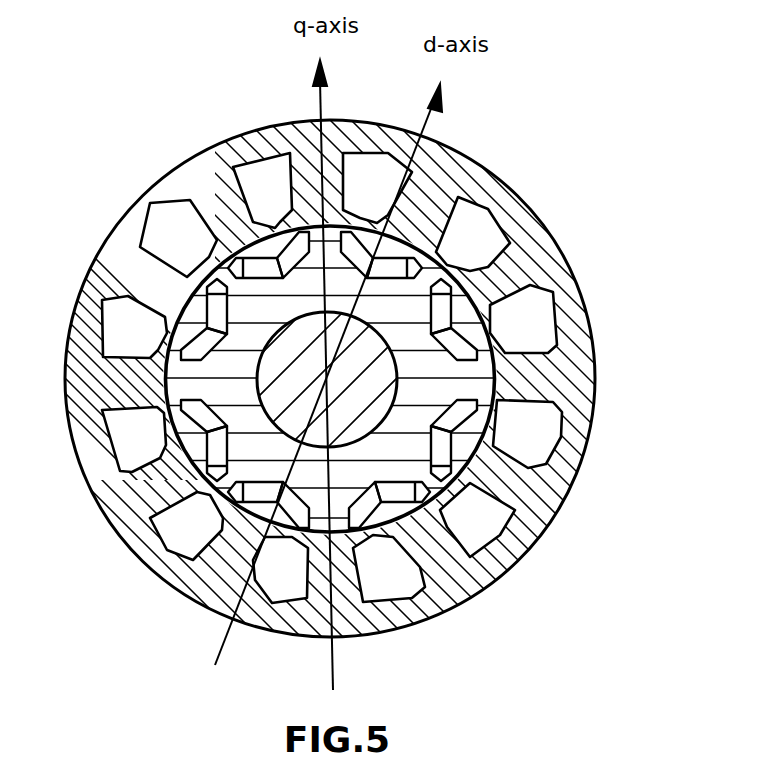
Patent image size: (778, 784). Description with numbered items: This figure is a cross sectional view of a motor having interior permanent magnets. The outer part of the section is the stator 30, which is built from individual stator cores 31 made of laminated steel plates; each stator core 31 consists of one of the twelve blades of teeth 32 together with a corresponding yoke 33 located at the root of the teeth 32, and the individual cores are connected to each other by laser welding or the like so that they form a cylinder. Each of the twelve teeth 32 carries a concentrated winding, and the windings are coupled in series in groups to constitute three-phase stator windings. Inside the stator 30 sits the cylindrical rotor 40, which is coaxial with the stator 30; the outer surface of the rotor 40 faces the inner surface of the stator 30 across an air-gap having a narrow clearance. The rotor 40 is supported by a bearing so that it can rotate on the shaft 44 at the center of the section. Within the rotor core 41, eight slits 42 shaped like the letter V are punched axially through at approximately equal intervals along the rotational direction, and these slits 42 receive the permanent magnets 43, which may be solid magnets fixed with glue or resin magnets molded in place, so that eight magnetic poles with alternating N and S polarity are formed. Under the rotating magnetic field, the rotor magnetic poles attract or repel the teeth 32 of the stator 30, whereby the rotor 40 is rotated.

The stator 30 is at (389, 355).
The stator core 31 is at (462, 185).
The teeth 32 is at (223, 212).
The yoke 33 is at (193, 177).
The rotor 40 is at (409, 372).
The rotor core 41 is at (405, 312).
The slits 42 is at (465, 402).
The permanent magnets 43 is at (447, 423).
The shaft 44 is at (347, 392).